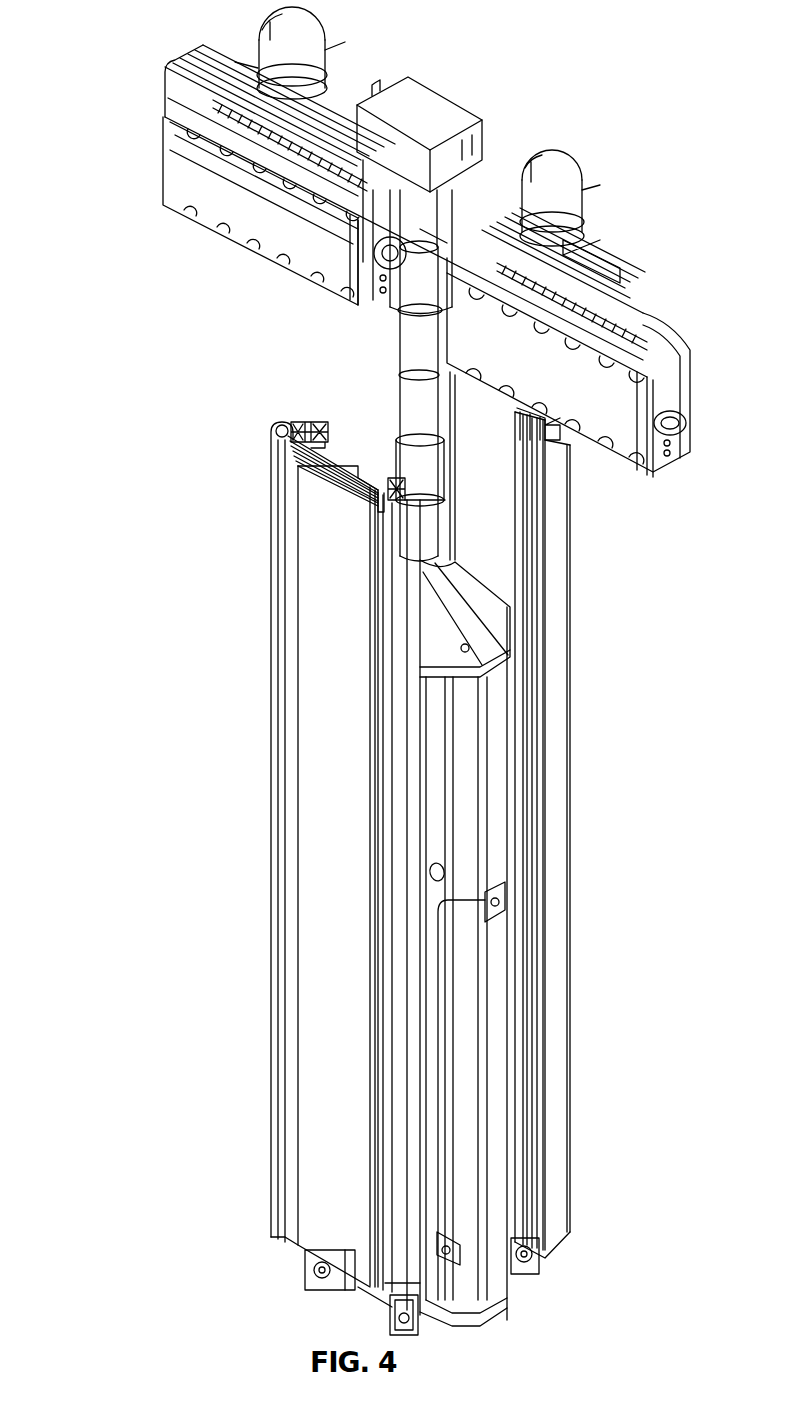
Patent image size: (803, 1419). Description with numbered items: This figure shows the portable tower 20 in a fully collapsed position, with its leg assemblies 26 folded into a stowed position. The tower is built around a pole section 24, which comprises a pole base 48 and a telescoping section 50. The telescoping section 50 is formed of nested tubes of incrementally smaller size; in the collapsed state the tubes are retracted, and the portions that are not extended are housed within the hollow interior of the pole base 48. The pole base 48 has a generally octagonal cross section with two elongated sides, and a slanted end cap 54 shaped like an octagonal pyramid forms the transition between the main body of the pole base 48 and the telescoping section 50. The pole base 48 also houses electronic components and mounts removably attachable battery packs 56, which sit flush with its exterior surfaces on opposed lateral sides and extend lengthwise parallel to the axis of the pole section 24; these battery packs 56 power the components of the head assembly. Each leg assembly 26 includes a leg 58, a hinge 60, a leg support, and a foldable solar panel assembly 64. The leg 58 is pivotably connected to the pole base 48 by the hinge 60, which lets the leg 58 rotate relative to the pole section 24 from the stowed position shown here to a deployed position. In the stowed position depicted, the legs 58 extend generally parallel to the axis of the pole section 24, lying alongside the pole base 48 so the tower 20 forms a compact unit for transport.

The portable tower 20 is at (118, 30).
The pole section 24 is at (620, 148).
The leg assemblies 26 is at (590, 518).
The pole base 48 is at (480, 830).
The telescoping section 50 is at (395, 348).
The slanted end cap 54 is at (478, 617).
The battery packs 56 is at (480, 1118).
The leg 58 is at (316, 420).
The hinge 60 is at (528, 1288).
The foldable solar panel assembly 64 is at (334, 771).